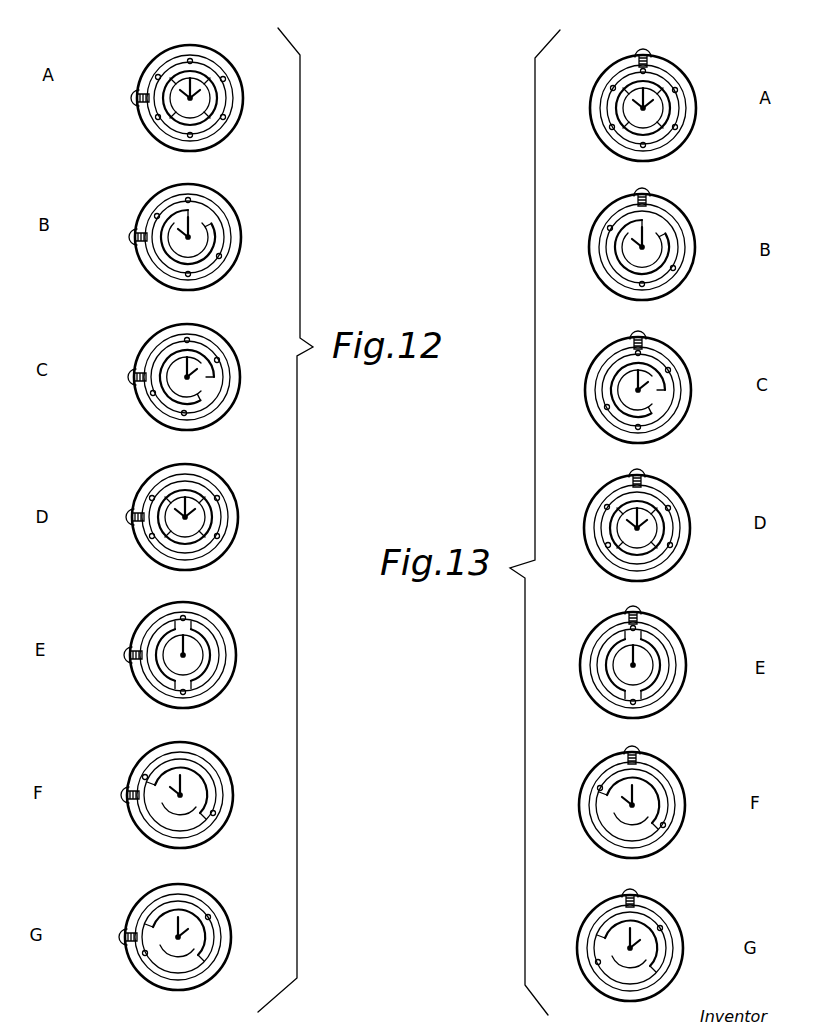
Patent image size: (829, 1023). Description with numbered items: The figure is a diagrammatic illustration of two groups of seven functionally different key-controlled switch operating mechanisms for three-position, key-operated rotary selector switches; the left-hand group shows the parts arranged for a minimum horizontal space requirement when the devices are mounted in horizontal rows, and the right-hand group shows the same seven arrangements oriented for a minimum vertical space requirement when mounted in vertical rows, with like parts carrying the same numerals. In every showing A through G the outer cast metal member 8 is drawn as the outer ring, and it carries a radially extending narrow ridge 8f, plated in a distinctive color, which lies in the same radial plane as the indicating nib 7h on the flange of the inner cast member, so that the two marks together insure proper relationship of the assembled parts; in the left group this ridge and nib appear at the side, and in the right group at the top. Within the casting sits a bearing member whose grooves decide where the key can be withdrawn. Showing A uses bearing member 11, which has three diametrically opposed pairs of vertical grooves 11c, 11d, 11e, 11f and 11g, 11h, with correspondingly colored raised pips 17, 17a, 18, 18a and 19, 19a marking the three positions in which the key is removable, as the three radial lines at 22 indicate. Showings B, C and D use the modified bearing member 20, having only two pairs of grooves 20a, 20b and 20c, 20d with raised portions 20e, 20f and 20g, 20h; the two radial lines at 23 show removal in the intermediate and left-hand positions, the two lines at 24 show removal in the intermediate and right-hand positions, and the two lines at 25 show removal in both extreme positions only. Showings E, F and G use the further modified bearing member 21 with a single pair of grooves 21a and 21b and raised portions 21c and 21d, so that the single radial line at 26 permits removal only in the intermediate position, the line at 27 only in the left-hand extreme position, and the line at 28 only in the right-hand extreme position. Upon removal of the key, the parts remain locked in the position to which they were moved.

In FIG. 12, the indicating nib 7h is at (109, 513).
In FIG. 13, the indicating nib 7h is at (627, 457).
In FIG. 12, the cast metal member 8 is at (199, 517).
In FIG. 13, the cast metal member 8 is at (632, 528).
In FIG. 12, the radially extending ridge 8f is at (117, 522).
In FIG. 13, the radially extending ridge 8f is at (655, 469).
In FIG. 12, the bearing member 11 is at (190, 84).
In FIG. 13, the bearing member 11 is at (664, 108).
In FIG. 12, the vertical groove 11c is at (171, 44).
In FIG. 13, the vertical groove 11c is at (677, 58).
In FIG. 12, the vertical groove 11d is at (163, 151).
In FIG. 13, the vertical groove 11d is at (686, 153).
In FIG. 12, the vertical groove 11e is at (130, 78).
In FIG. 13, the vertical groove 11e is at (588, 85).
In FIG. 12, the vertical groove 11f is at (253, 131).
In FIG. 13, the vertical groove 11f is at (707, 135).
In FIG. 12, the vertical groove 11g is at (257, 68).
In FIG. 13, the vertical groove 11g is at (709, 92).
In FIG. 12, the vertical groove 11h is at (131, 126).
In FIG. 13, the vertical groove 11h is at (594, 146).
In FIG. 12, the raised portion 17 is at (199, 41).
In FIG. 13, the raised portion 17 is at (624, 55).
In FIG. 12, the raised portion 17a is at (218, 147).
In FIG. 13, the raised portion 17a is at (659, 161).
In FIG. 12, the raised portion 18 is at (240, 61).
In FIG. 13, the raised portion 18 is at (696, 78).
In FIG. 12, the raised portion 18a is at (142, 133).
In FIG. 13, the raised portion 18a is at (586, 135).
In FIG. 12, the raised portion 19 is at (139, 64).
In FIG. 13, the raised portion 19 is at (594, 76).
In FIG. 12, the raised portion 19a is at (250, 112).
In FIG. 13, the raised portion 19a is at (700, 122).
In FIG. 12, the bearing member 20 is at (206, 376).
In FIG. 13, the bearing member 20 is at (643, 392).
In FIG. 12, the vertical groove 20a is at (183, 344).
In FIG. 13, the vertical groove 20a is at (636, 365).
In FIG. 12, the vertical groove 20b is at (197, 402).
In FIG. 13, the vertical groove 20b is at (639, 417).
In FIG. 12, the vertical groove 20c is at (211, 353).
In FIG. 13, the vertical groove 20c is at (699, 456).
In FIG. 12, the vertical groove 20d is at (144, 384).
In FIG. 13, the vertical groove 20d is at (625, 398).
In FIG. 12, the raised portion 20e is at (187, 349).
In FIG. 13, the raised portion 20e is at (640, 360).
In FIG. 12, the raised portion 20f is at (187, 403).
In FIG. 13, the raised portion 20f is at (640, 400).
In FIG. 12, the raised portion 20g is at (235, 361).
In FIG. 13, the raised portion 20g is at (653, 377).
In FIG. 12, the raised portion 20h is at (174, 385).
In FIG. 13, the raised portion 20h is at (597, 400).
In FIG. 12, the bearing member 21 is at (195, 796).
In FIG. 13, the bearing member 21 is at (652, 806).
In FIG. 12, the vertical groove 21a is at (189, 751).
In FIG. 13, the vertical groove 21a is at (630, 772).
In FIG. 12, the vertical groove 21b is at (185, 839).
In FIG. 13, the vertical groove 21b is at (631, 834).
In FIG. 12, the raised portion 21c is at (178, 751).
In FIG. 13, the raised portion 21c is at (636, 775).
In FIG. 12, the raised portion 21d is at (180, 830).
In FIG. 13, the raised portion 21d is at (630, 842).
In FIG. 12, the three radial lines 22 is at (193, 98).
In FIG. 13, the three radial lines 22 is at (645, 108).
In FIG. 12, the two radial lines 23 is at (188, 237).
In FIG. 13, the two radial lines 23 is at (642, 247).
In FIG. 12, the two radial lines 24 is at (187, 377).
In FIG. 13, the two radial lines 24 is at (642, 389).
In FIG. 12, the two radial lines 25 is at (186, 517).
In FIG. 13, the two radial lines 25 is at (637, 528).
In FIG. 12, the single radial line 26 is at (182, 656).
In FIG. 13, the single radial line 26 is at (637, 666).
In FIG. 12, the single radial line 27 is at (180, 796).
In FIG. 13, the single radial line 27 is at (633, 806).
In FIG. 12, the single radial line 28 is at (178, 936).
In FIG. 13, the single radial line 28 is at (632, 947).